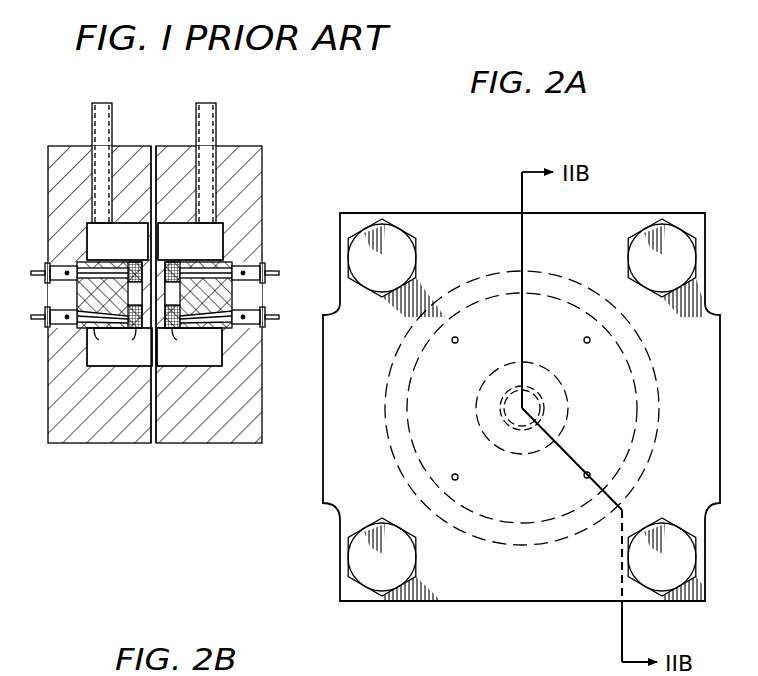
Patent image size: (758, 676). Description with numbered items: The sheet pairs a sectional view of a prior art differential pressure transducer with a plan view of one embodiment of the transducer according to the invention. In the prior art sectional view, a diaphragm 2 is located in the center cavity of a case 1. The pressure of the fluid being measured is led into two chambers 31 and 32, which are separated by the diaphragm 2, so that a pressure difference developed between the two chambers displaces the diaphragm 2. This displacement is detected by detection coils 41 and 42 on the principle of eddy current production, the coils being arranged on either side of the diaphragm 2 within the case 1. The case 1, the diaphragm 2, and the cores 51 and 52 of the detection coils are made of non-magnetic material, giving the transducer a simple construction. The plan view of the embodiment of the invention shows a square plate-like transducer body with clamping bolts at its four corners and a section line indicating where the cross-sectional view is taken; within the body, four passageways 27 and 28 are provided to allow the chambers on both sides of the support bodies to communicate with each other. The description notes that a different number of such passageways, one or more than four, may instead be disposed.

In FIG. 1, the case 1 is at (262, 158).
In FIG. 1, the diaphragm 2 is at (153, 146).
In FIG. 1, the chamber 31 is at (128, 257).
In FIG. 1, the chamber 32 is at (201, 257).
In FIG. 1, the detection coil 41 is at (119, 347).
In FIG. 1, the detection coil 42 is at (189, 347).
In FIG. 1, the core 51 is at (87, 347).
In FIG. 2A, the core 51 is at (430, 601).
In FIG. 1, the core 52 is at (225, 265).
In FIG. 2A, the core 52 is at (665, 409).
In FIG. 2A, the passageway 27 is at (584, 339).
In FIG. 2A, the passageway 28 is at (470, 322).